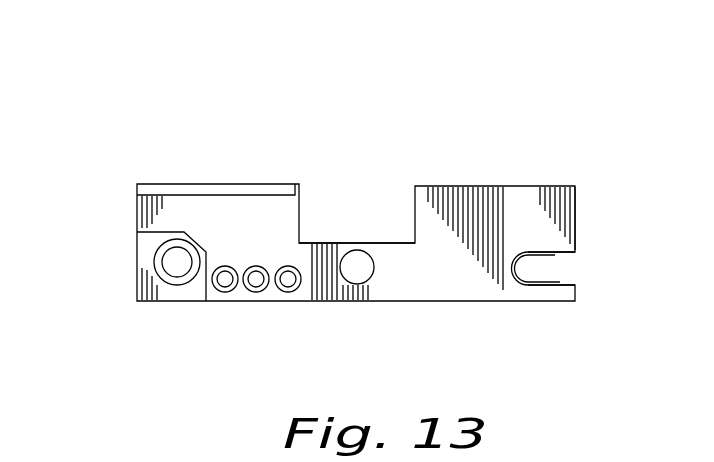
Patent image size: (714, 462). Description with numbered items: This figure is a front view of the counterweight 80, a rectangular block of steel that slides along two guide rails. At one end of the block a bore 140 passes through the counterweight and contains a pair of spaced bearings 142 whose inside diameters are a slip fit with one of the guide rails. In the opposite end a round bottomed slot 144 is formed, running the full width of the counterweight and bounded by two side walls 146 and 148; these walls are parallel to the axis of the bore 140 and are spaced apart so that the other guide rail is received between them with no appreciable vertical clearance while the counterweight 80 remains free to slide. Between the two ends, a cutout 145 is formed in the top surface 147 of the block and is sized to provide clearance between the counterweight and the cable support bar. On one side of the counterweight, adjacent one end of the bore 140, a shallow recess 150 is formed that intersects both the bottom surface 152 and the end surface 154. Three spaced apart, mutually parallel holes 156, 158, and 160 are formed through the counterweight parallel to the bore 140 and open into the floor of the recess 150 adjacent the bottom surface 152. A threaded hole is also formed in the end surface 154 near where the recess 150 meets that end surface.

The counterweight 80 is at (347, 112).
The bore 140 is at (164, 270).
The bearings 142 is at (156, 262).
The round bottomed slot 144 is at (530, 263).
The cutout 145 is at (352, 195).
The side wall 146 is at (552, 254).
The top surface 147 is at (247, 183).
The side wall 148 is at (562, 279).
The shallow recess 150 is at (278, 210).
The bottom surface 152 is at (340, 300).
The end surface 154 is at (136, 248).
The hole 156 is at (293, 293).
The hole 158 is at (255, 292).
The hole 160 is at (221, 291).